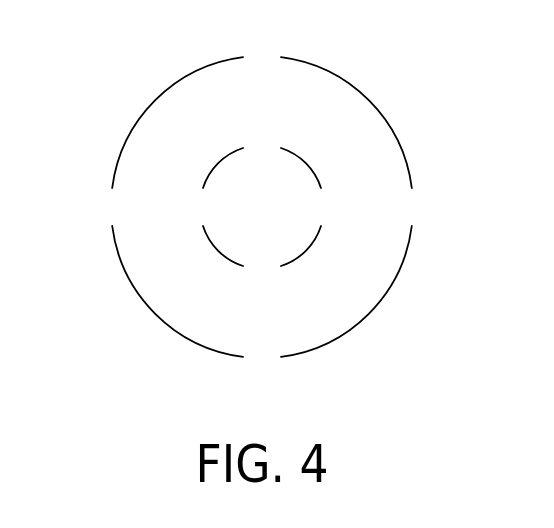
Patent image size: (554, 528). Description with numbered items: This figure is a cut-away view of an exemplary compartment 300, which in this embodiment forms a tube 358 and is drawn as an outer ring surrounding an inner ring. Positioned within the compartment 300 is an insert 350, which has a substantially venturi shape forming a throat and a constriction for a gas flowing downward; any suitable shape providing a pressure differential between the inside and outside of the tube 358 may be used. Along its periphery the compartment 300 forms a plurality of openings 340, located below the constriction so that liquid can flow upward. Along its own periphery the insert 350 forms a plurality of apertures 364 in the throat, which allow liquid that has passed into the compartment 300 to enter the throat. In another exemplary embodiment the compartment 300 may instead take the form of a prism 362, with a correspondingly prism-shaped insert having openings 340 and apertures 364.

The compartment 300 is at (120, 100).
The openings 340 is at (261, 58).
The insert 350 is at (307, 158).
The tube 358 is at (277, 207).
The prism 362 is at (393, 280).
The aperture 364 is at (261, 145).